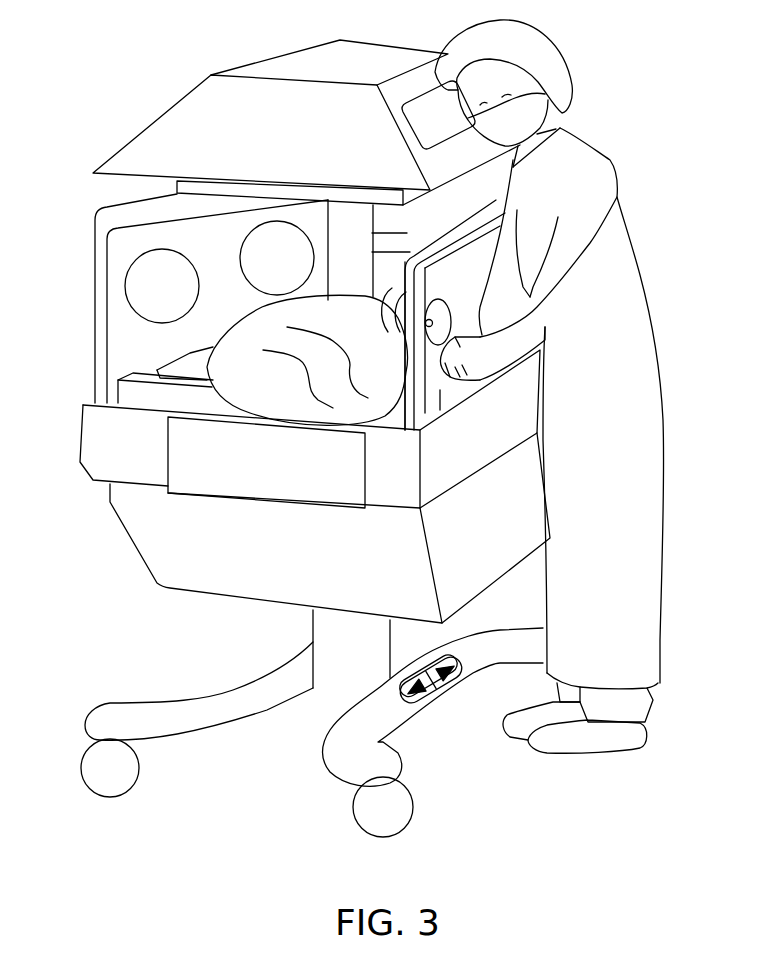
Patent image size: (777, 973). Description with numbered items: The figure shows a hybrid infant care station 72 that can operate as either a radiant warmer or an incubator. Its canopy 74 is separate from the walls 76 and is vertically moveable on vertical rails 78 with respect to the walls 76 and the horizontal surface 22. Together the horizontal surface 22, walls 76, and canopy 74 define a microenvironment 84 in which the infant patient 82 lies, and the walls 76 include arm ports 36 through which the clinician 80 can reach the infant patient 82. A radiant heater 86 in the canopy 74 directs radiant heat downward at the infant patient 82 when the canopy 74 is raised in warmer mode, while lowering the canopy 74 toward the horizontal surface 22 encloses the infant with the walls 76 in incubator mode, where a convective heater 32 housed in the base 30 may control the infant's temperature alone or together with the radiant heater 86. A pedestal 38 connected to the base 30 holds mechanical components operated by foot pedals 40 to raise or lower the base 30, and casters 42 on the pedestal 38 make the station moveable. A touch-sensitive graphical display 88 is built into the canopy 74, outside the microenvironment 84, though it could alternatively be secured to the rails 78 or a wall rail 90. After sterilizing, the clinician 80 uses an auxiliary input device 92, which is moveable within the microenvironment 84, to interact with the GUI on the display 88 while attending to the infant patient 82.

The hybrid infant care station 72 is at (145, 75).
The canopy 74 is at (296, 125).
The radiant heater 86 is at (310, 186).
The vertical rails 78 is at (360, 223).
The wall rail 90 is at (133, 211).
The walls 76 is at (117, 256).
The arm ports 36 is at (133, 256).
The infant patient 82 is at (360, 334).
The microenvironment 84 is at (160, 352).
The horizontal surface 22 is at (130, 393).
The convective heater 32 is at (277, 475).
The base 30 is at (288, 567).
The pedestal 38 is at (330, 636).
The foot pedals 40 is at (433, 696).
The casters 42 is at (398, 812).
The clinician 80 is at (613, 307).
The touch-sensitive graphical display 88 is at (448, 130).
The auxiliary input device 92 is at (442, 392).